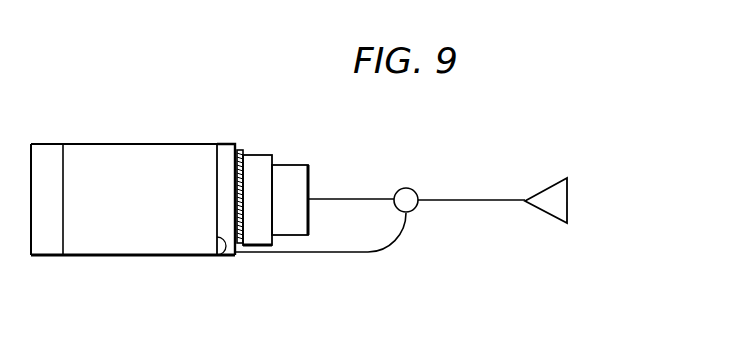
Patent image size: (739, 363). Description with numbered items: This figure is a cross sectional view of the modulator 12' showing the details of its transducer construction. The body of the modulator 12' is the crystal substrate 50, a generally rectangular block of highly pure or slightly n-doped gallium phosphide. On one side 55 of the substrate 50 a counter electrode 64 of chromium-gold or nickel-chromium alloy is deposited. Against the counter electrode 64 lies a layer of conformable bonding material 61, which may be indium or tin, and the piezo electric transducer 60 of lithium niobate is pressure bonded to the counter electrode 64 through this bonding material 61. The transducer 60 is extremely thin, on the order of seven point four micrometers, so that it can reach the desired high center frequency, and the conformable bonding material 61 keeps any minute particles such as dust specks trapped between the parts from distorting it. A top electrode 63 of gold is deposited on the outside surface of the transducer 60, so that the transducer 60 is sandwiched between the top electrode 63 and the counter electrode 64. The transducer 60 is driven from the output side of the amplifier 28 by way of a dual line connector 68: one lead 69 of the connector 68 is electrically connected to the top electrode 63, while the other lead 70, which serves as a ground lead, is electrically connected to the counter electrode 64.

The modulator 12' is at (184, 167).
The crystal substrate 50 is at (98, 144).
The counter electrode 64 is at (225, 144).
The side of substrate 55 is at (222, 256).
The conformable bonding material 61 is at (244, 150).
The piezo electric transducer 60 is at (258, 246).
The top electrode 63 is at (308, 236).
The lead 69 is at (360, 199).
The dual line connector 68 is at (416, 189).
The lead 70 is at (394, 241).
The amplifier 28 is at (542, 190).